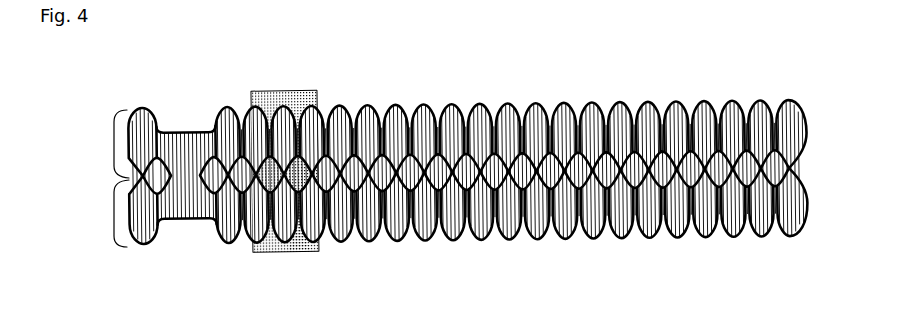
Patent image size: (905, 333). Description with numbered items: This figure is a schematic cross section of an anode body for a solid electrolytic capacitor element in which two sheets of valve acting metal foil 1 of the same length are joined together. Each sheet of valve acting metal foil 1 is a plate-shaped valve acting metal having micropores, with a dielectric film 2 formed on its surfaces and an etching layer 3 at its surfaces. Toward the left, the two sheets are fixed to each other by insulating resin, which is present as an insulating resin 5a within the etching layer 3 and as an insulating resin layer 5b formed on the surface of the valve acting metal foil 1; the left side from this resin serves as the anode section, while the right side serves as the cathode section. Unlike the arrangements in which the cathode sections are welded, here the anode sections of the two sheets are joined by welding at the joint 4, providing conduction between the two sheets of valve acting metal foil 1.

The valve acting metal foil 1 is at (108, 140).
The dielectric film 2 is at (228, 101).
The etching layer 3 is at (352, 234).
The joint 4 is at (188, 131).
The insulating resin 5a is at (300, 236).
The insulating resin layer 5b is at (261, 253).